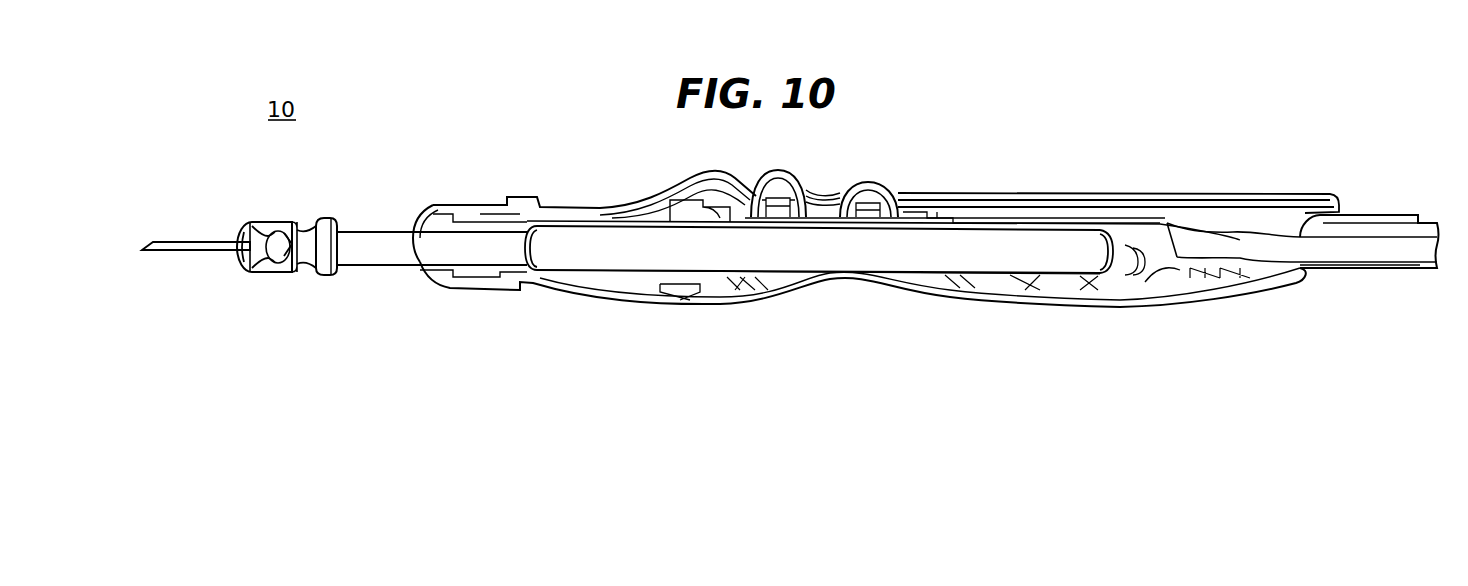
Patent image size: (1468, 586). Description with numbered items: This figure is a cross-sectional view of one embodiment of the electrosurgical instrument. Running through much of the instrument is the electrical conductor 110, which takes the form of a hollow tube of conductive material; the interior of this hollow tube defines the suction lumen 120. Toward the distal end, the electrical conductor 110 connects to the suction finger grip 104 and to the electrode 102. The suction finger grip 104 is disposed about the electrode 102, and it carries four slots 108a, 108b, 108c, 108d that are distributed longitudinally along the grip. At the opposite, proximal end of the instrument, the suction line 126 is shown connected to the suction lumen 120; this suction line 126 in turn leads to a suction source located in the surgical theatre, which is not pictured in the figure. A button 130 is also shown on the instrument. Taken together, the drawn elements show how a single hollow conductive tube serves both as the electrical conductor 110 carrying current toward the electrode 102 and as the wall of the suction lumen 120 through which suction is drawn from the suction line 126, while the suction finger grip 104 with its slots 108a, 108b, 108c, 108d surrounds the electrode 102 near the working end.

The electrode 102 is at (170, 232).
The suction finger grip 104 is at (248, 241).
The slot 108a is at (266, 222).
The slot 108b is at (283, 247).
The slot 108c is at (273, 272).
The slot 108d is at (241, 267).
The electrical conductor 110 is at (574, 212).
The suction lumen 120 is at (604, 283).
The suction line 126 is at (1380, 216).
The button 130 is at (791, 168).